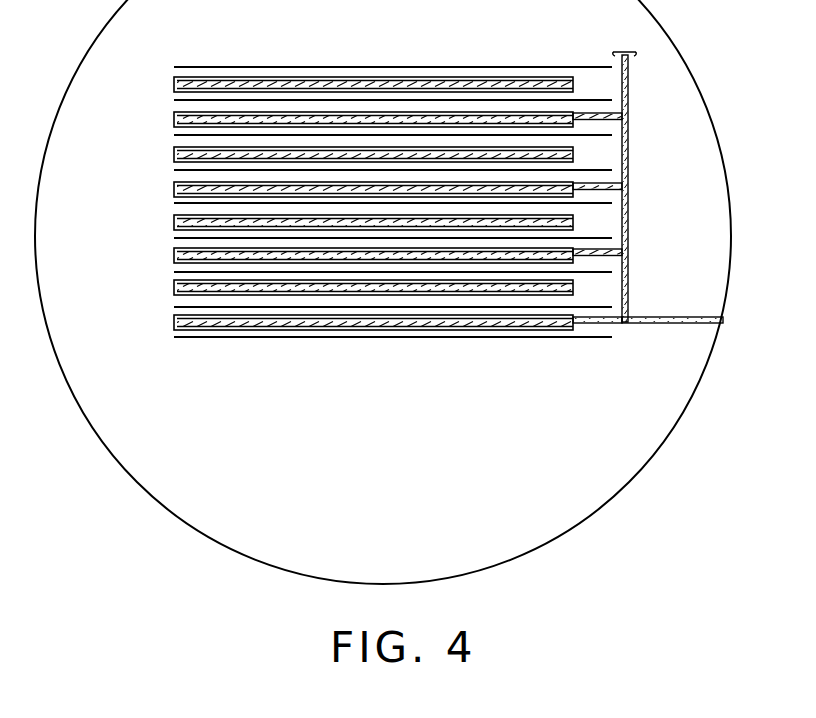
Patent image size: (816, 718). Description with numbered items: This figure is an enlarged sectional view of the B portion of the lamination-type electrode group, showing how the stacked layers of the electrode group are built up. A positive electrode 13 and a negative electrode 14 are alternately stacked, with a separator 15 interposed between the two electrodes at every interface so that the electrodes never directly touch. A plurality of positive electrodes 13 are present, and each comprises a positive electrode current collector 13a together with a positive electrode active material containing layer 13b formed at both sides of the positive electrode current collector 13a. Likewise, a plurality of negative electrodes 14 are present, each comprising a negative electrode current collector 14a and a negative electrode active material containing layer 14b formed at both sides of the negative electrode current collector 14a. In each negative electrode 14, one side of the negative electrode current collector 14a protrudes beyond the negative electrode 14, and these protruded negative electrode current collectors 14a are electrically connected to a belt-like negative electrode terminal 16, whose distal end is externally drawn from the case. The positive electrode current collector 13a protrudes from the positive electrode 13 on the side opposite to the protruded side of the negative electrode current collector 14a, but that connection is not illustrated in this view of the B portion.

The positive electrode 13 is at (310, 208).
The positive electrode current collector 13a is at (174, 288).
The positive electrode active material containing layer 13b is at (174, 281).
The negative electrode 14 is at (391, 252).
The negative electrode current collector 14a is at (602, 113).
The negative electrode active material containing layer 14b is at (174, 318).
The separator 15 is at (451, 67).
The negative electrode terminal 16 is at (673, 324).
The B portion B is at (623, 488).